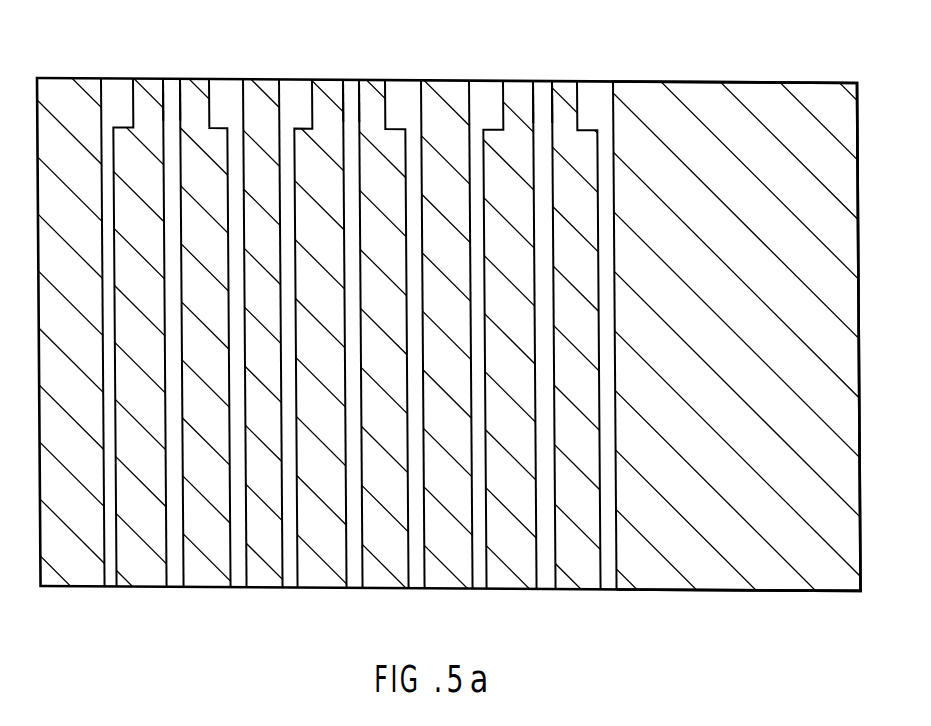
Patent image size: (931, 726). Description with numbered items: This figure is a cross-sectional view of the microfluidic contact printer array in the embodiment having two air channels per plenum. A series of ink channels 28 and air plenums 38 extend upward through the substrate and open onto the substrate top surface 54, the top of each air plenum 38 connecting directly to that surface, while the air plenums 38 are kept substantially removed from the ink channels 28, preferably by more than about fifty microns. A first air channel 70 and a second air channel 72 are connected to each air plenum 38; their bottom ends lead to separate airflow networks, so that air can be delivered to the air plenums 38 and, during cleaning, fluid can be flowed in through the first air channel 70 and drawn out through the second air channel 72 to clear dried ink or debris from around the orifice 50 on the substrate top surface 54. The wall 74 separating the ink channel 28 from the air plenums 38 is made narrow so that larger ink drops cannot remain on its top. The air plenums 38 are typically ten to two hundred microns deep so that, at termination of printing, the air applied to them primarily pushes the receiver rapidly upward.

The ink channel 28 is at (183, 568).
The air plenum 38 is at (116, 82).
The orifice 50 is at (170, 85).
The substrate top surface 54 is at (764, 83).
The first air channel 70 is at (609, 588).
The second air channel 72 is at (478, 587).
The wall 74 is at (273, 576).